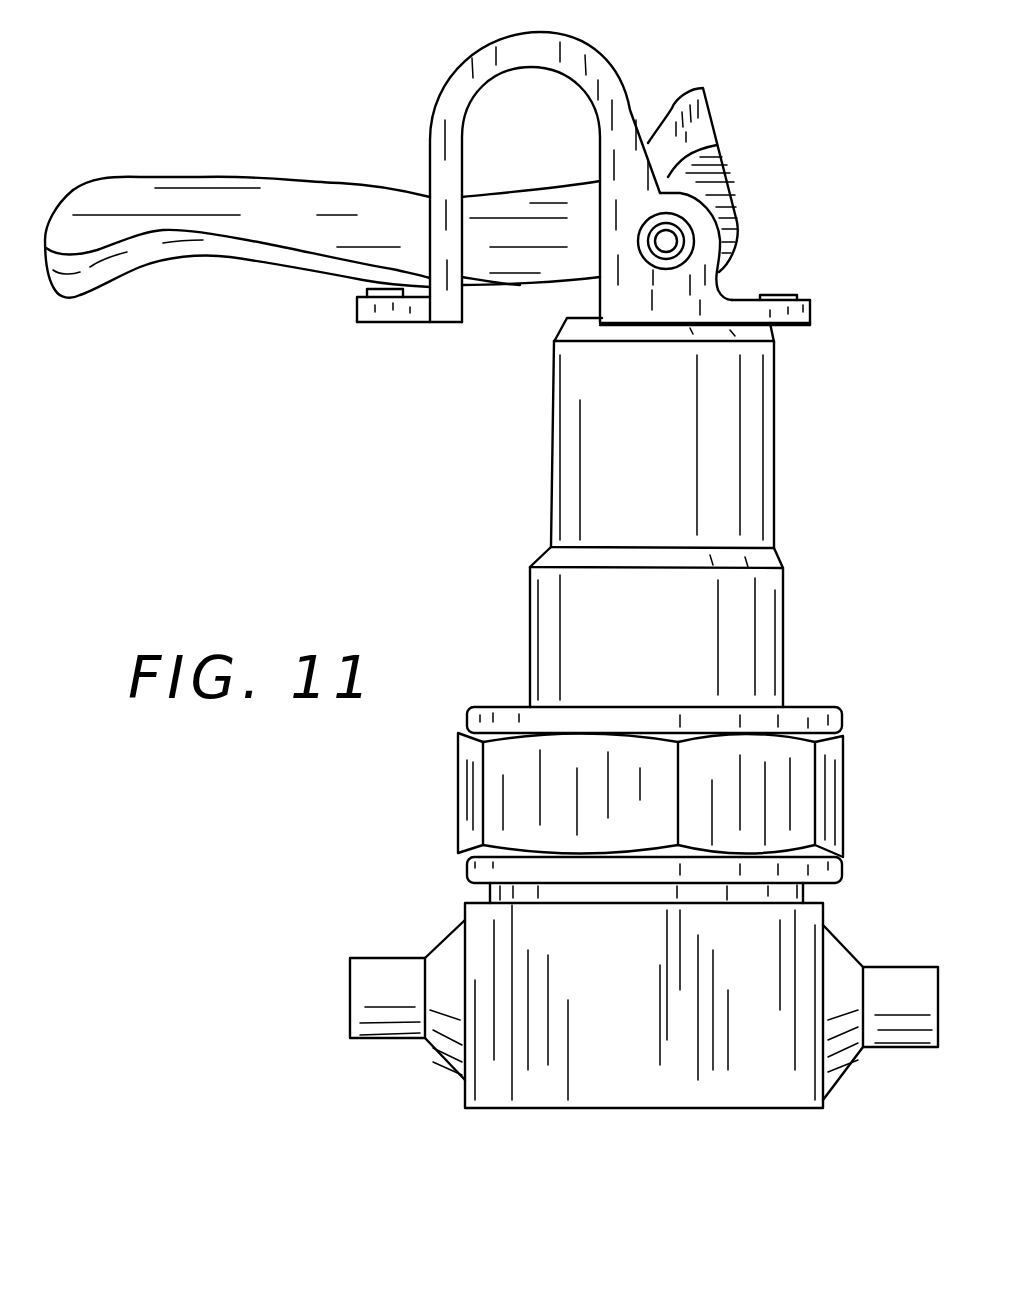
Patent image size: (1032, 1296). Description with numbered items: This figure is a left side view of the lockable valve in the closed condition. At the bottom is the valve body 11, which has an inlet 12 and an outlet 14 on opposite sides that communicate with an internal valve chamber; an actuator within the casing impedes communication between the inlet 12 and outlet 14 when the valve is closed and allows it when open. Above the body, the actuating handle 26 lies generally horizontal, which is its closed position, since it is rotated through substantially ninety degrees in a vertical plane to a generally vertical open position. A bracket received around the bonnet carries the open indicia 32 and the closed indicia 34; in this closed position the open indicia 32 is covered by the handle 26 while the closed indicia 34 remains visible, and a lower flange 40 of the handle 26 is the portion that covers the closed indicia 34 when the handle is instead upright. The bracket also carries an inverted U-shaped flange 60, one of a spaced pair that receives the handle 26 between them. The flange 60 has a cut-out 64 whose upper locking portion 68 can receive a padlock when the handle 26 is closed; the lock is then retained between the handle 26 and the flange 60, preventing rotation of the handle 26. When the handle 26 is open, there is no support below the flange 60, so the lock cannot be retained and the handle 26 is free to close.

The valve body 11 is at (607, 1060).
The inlet 12 is at (375, 965).
The outlet 14 is at (897, 977).
The actuating handle 26 is at (193, 193).
The open indicia 32 is at (350, 282).
The closed indicia 34 is at (771, 296).
The lower flange 40 is at (705, 125).
The U-shaped flange 60 is at (580, 58).
The cut-out 64 is at (512, 306).
The upper locking portion 68 is at (508, 134).